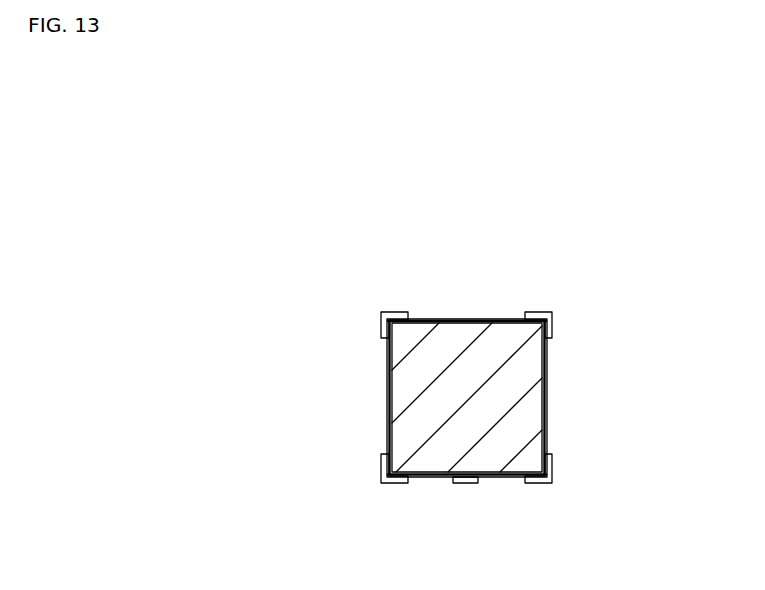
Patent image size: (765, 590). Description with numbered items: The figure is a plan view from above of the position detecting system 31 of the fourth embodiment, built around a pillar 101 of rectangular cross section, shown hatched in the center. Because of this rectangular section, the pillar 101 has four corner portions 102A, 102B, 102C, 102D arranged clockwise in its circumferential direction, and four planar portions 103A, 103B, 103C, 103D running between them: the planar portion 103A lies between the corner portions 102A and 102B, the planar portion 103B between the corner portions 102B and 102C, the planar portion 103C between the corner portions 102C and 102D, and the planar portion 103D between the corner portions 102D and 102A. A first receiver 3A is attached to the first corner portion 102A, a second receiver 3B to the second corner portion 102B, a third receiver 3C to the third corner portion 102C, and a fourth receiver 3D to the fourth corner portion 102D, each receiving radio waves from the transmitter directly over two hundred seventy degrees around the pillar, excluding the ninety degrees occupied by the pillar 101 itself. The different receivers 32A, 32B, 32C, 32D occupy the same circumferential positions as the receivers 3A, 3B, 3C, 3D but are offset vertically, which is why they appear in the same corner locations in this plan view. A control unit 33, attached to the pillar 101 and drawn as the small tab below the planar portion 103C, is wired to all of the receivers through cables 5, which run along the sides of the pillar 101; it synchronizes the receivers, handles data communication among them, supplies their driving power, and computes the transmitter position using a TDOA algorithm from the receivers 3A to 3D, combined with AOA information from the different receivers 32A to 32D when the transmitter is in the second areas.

The position detecting system 31 is at (637, 252).
The pillar 101 is at (422, 345).
The cables 5 is at (388, 413).
The control unit 33 is at (465, 483).
The planar portion 103A is at (478, 320).
The planar portion 103B is at (545, 380).
The planar portion 103C is at (433, 474).
The planar portion 103D is at (390, 377).
The first receiver 3A is at (350, 302).
The second receiver 3B is at (586, 302).
The third receiver 3C is at (586, 491).
The fourth receiver 3D is at (348, 490).
The different receiver 32A is at (350, 302).
The different receiver 32B is at (586, 302).
The different receiver 32C is at (586, 491).
The different receiver 32D is at (348, 490).
The first corner portion 102A is at (387, 295).
The second corner portion 102B is at (550, 325).
The third corner portion 102C is at (538, 468).
The fourth corner portion 102D is at (395, 468).